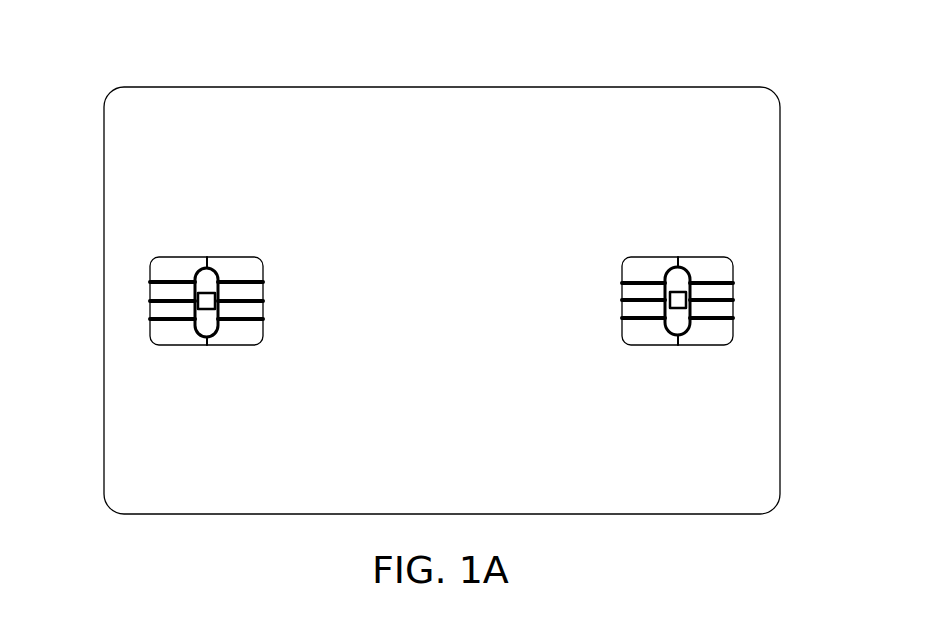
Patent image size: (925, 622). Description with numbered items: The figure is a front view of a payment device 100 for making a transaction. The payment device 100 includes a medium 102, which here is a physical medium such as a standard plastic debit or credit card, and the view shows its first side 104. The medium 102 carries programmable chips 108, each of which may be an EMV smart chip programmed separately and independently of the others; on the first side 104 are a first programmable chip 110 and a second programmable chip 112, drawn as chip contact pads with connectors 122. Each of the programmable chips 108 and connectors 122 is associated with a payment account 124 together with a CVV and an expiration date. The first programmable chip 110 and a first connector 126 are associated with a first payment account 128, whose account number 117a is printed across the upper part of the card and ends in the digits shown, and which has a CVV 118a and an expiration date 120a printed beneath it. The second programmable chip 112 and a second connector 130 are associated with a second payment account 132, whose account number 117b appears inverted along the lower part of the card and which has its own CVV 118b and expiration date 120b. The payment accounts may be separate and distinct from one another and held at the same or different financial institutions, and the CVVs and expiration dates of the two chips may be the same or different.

The payment device 100 is at (730, 58).
The medium 102 is at (758, 133).
The first side 104 is at (717, 168).
The programmable chips 108 is at (203, 274).
The first programmable chip 110 is at (199, 298).
The second programmable chip 112 is at (686, 305).
The account number 117a is at (552, 145).
The account number 117b is at (679, 449).
The CVV 118a is at (140, 195).
The CVV 118b is at (755, 408).
The expiration date 120a is at (307, 195).
The expiration date 120b is at (588, 405).
The connectors 122 is at (203, 362).
The payment account 124 is at (573, 150).
The first connector 126 is at (227, 335).
The first payment account 128 is at (226, 121).
The second connector 130 is at (652, 333).
The second payment account 132 is at (314, 453).